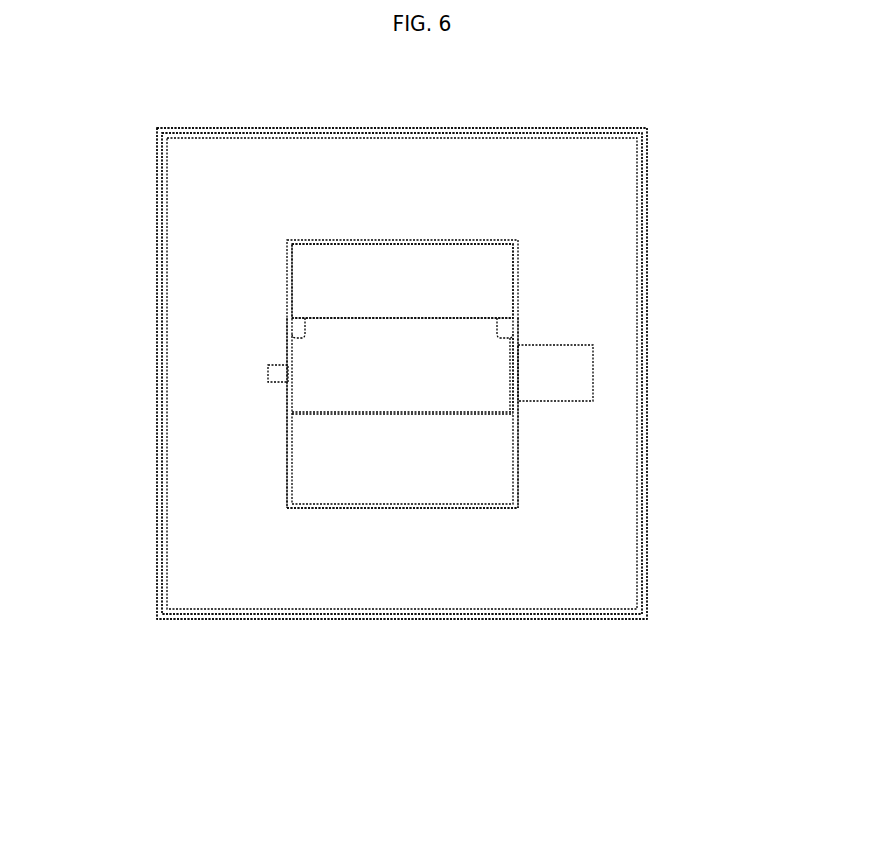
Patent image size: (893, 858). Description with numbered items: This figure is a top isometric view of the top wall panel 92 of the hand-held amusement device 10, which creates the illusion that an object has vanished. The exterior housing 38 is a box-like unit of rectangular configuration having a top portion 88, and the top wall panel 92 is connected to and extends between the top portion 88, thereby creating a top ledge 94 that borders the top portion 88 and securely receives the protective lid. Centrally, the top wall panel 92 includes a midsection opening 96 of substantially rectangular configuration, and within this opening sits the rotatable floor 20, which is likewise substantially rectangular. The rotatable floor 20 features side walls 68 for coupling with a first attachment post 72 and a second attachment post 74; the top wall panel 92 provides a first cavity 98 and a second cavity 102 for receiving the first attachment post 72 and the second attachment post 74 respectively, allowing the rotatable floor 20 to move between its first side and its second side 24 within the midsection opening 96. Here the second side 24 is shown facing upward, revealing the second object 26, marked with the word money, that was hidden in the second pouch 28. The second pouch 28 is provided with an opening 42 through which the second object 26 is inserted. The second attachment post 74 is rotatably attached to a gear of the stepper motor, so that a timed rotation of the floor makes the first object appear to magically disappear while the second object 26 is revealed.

The device 10 is at (130, 190).
The rotatable floor 20 is at (526, 265).
The second side 24 is at (348, 275).
The second object 26 is at (404, 362).
The second pouch 28 is at (443, 483).
The exterior housing 38 is at (647, 309).
The opening 42 is at (511, 328).
The side walls 68 is at (288, 447).
The first attachment post 72 is at (289, 372).
The second attachment post 74 is at (516, 372).
The top portion 88 is at (161, 384).
The top wall panel 92 is at (205, 170).
The top ledge 94 is at (162, 320).
The midsection opening 96 is at (397, 512).
The first cavity 98 is at (275, 370).
The second cavity 102 is at (548, 375).